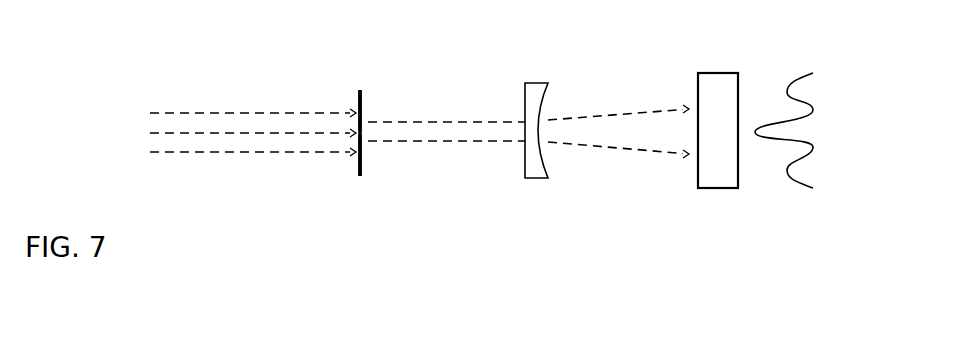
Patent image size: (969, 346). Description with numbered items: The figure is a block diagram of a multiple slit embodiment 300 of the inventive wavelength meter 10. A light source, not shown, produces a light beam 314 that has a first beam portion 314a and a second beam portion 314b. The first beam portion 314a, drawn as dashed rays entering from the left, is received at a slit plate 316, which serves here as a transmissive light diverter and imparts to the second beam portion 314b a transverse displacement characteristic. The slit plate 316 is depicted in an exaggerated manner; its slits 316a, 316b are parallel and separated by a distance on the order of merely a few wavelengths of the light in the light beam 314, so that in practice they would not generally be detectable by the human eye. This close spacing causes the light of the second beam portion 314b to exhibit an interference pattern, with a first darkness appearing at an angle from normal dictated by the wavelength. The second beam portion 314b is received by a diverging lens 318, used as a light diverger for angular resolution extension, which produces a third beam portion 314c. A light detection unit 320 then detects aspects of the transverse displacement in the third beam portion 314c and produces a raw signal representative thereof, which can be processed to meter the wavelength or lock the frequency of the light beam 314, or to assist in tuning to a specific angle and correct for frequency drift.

The multiple slit embodiment 300 is at (252, 251).
The light beam 314 is at (218, 78).
The first beam portion 314a is at (253, 132).
The second beam portion 314b is at (497, 86).
The third beam portion 314c is at (633, 76).
The slit plate 316 is at (358, 168).
The slit 316a is at (375, 104).
The slit 316b is at (376, 155).
The diverging lens 318 is at (524, 178).
The light detection unit 320 is at (715, 73).
The wavelength meter 10 is at (793, 270).